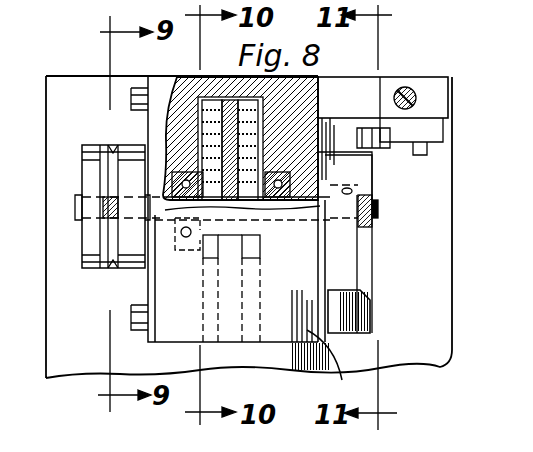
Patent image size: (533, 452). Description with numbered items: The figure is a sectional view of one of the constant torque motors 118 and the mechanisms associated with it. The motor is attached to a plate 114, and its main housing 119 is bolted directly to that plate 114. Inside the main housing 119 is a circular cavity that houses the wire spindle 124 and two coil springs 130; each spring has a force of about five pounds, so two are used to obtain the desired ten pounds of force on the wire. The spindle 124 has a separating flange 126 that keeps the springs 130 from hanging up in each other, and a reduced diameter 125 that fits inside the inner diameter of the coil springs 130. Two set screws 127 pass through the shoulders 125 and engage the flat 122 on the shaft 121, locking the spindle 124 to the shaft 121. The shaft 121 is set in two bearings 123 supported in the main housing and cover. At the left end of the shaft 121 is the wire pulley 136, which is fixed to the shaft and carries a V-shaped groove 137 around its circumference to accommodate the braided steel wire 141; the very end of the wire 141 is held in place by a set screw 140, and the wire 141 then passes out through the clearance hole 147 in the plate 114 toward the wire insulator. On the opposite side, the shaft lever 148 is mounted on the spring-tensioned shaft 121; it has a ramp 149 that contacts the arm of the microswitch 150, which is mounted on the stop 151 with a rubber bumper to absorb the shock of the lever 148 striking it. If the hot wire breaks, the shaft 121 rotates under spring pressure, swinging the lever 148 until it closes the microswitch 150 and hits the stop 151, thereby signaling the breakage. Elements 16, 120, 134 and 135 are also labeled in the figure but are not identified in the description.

The frame 16 is at (0, 46).
The plate 114 is at (74, 378).
The constant torque motor 118 is at (298, 377).
The main housing 119 is at (337, 375).
The housing 120 is at (158, 340).
The shaft 121 is at (80, 193).
The flat 122 is at (192, 160).
The bearings 123 is at (330, 172).
The wire spindle 124 is at (150, 147).
The reduced diameter 125 is at (272, 157).
The separating flange 126 is at (228, 108).
The set screws 127 is at (215, 197).
The coil springs 130 is at (173, 78).
The guide block 134 is at (262, 247).
The guide block 135 is at (228, 258).
The wire pulley 136 is at (85, 247).
The V-shaped groove 137 is at (112, 150).
The set screw 140 is at (100, 222).
The braided steel wire 141 is at (100, 268).
The clearance hole 147 is at (125, 280).
The shaft lever 148 is at (372, 315).
The ramp 149 is at (368, 247).
The microswitch 150 is at (415, 118).
The stop 151 is at (365, 82).